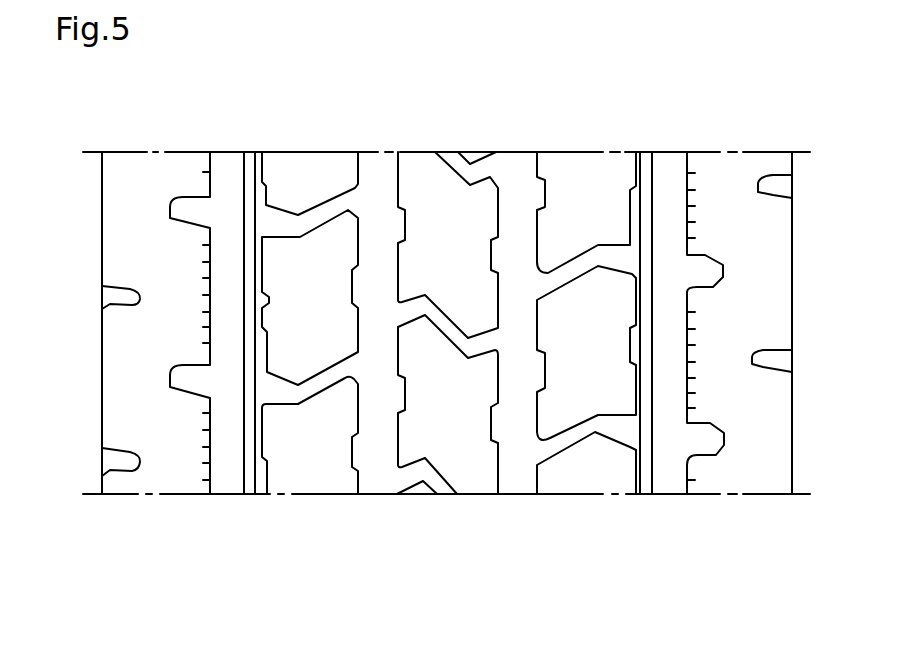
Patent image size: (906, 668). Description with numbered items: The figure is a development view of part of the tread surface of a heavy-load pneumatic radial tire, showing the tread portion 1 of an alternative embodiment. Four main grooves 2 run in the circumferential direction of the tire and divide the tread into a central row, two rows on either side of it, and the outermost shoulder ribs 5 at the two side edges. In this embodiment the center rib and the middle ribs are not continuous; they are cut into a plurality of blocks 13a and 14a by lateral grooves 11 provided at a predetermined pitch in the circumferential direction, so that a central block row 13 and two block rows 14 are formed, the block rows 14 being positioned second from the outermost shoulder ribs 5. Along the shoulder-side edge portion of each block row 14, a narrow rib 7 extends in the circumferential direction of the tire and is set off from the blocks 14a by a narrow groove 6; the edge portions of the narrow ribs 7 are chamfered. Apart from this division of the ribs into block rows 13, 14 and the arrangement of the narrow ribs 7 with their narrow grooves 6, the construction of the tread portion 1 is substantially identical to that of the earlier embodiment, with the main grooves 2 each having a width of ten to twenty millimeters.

The tread portion 1 is at (713, 152).
The main grooves 2 is at (223, 478).
The outermost shoulder ribs 5 is at (160, 478).
The narrow grooves 6 is at (263, 184).
The narrow ribs 7 is at (249, 160).
The lateral grooves 11 is at (351, 198).
The block row 13 is at (447, 340).
The blocks 13a is at (435, 188).
The block rows 14 is at (449, 343).
The blocks 14a is at (325, 247).